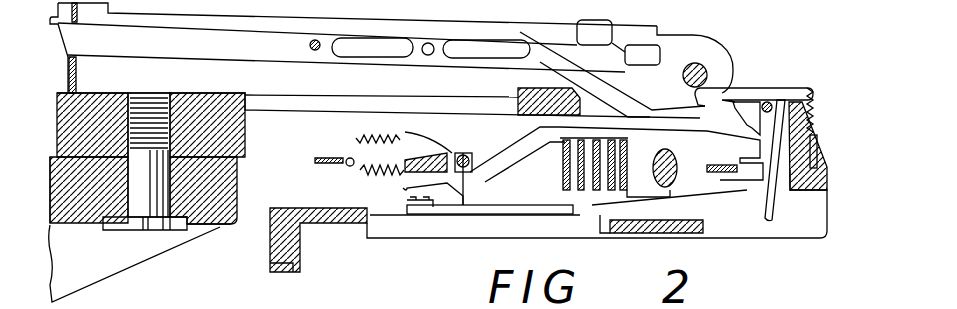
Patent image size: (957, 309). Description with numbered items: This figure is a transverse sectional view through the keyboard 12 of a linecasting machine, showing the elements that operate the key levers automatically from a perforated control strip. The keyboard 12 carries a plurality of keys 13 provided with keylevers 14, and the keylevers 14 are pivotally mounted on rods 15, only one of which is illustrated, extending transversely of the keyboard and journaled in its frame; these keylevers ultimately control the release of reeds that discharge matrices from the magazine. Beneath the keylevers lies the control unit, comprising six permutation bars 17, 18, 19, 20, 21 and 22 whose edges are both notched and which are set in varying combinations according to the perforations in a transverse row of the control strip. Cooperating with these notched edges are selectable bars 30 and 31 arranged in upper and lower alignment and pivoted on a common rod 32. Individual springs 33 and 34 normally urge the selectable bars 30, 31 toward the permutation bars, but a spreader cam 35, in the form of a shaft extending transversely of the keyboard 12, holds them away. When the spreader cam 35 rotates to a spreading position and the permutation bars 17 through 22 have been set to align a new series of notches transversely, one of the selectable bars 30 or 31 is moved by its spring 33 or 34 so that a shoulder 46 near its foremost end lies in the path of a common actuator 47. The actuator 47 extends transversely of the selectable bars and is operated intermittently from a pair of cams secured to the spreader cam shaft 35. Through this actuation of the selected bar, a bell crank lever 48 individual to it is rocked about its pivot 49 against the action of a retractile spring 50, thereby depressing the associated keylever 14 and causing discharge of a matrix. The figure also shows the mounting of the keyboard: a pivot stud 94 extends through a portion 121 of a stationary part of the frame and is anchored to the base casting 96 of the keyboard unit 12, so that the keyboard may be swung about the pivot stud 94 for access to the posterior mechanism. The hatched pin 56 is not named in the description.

The keyboard 12 is at (666, 29).
The keys 13 is at (592, 26).
The keylevers 14 is at (223, 56).
The rods 15 is at (313, 52).
The permutation bar 17 is at (583, 133).
The permutation bar 18 is at (650, 103).
The permutation bar 19 is at (590, 140).
The permutation bar 20 is at (600, 140).
The permutation bar 21 is at (663, 103).
The permutation bar 22 is at (625, 152).
The selectable bar 30 is at (525, 140).
The selectable bar 31 is at (545, 197).
The common rod 32 is at (466, 155).
The spring 33 is at (372, 182).
The spring 34 is at (382, 138).
The spreader cam 35 is at (672, 182).
The shoulder 46 is at (750, 183).
The common actuator 47 is at (728, 173).
The bell crank lever 48 is at (750, 87).
The pivot 49 is at (770, 90).
The retractile spring 50 is at (813, 110).
The hammer pin 56 is at (704, 67).
The pivot stud 94 is at (237, 182).
The base casting 96 is at (200, 93).
The portion of stationary frame part 121 is at (72, 223).